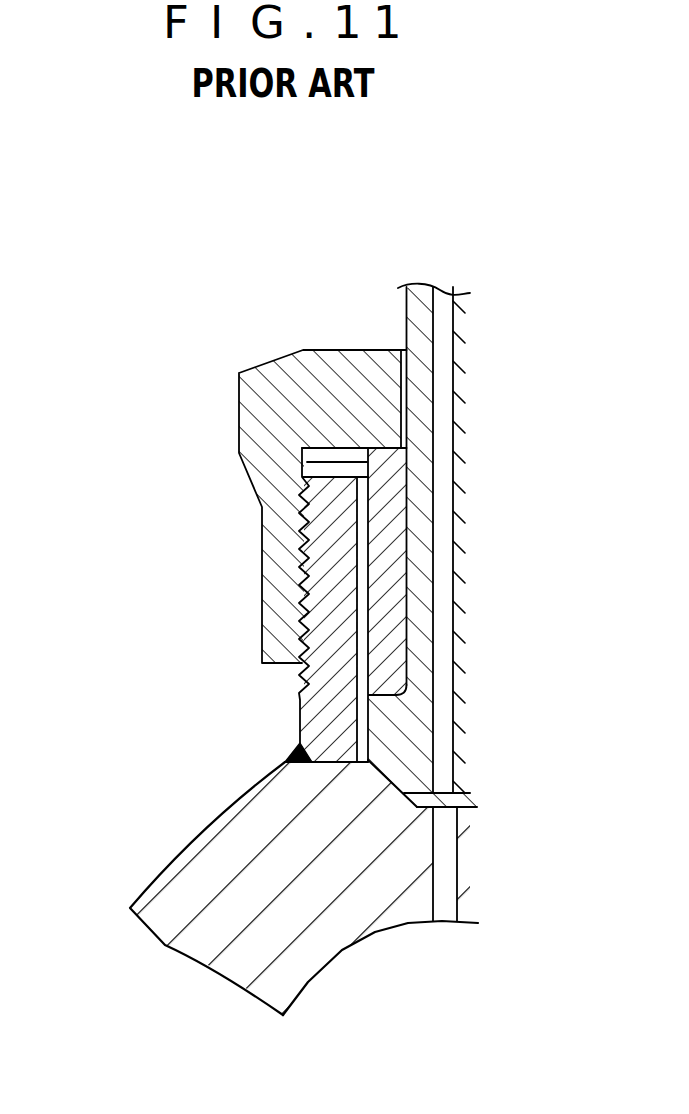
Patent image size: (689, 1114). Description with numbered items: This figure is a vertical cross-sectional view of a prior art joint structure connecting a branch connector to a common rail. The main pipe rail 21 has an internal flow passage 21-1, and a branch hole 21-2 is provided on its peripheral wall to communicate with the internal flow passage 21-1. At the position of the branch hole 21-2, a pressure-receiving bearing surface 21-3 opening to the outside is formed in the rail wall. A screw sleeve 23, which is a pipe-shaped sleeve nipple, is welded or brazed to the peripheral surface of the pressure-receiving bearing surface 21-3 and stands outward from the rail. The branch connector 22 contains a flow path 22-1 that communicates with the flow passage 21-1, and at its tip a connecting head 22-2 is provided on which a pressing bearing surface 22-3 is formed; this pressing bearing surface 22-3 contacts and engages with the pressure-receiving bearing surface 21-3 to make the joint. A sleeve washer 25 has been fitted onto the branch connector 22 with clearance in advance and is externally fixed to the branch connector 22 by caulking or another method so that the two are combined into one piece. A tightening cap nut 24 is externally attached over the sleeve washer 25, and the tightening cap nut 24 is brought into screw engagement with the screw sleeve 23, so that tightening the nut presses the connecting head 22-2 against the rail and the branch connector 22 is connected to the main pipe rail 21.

The main pipe rail 21 is at (207, 881).
The internal flow passage 21-1 is at (325, 965).
The branch hole 21-2 is at (438, 898).
The pressure-receiving bearing surface 21-3 is at (375, 770).
The branch connector 22 is at (417, 310).
The flow path 22-1 is at (442, 303).
The connecting head 22-2 is at (405, 765).
The pressing bearing surface 22-3 is at (404, 794).
The screw sleeve 23 is at (322, 690).
The tightening cap nut 24 is at (267, 423).
The sleeve washer 25 is at (375, 541).